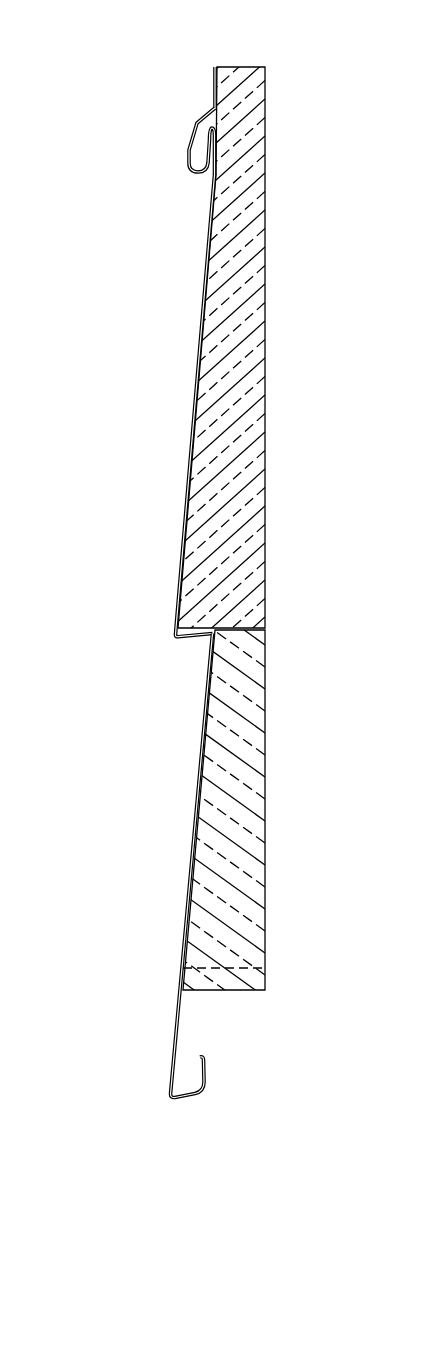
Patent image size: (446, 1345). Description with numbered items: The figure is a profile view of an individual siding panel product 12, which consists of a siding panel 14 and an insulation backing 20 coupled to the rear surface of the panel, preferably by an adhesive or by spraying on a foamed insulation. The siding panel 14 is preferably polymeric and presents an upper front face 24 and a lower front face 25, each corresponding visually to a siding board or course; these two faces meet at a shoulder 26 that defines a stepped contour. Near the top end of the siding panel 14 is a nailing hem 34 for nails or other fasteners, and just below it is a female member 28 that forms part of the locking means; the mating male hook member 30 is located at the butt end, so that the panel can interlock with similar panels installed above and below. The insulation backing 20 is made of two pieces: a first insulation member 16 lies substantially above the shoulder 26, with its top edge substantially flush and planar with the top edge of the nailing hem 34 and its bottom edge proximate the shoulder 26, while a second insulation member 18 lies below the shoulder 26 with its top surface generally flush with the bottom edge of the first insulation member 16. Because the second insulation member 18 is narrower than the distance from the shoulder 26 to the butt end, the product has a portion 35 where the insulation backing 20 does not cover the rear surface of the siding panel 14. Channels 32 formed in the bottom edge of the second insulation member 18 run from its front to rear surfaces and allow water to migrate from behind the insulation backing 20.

The siding panel product 12 is at (144, 463).
The siding panel 14 is at (180, 556).
The first insulation member 16 is at (265, 368).
The second insulation member 18 is at (265, 773).
The insulation backing 20 is at (313, 540).
The upper front face 24 is at (198, 373).
The lower front face 25 is at (196, 818).
The shoulder 26 is at (173, 637).
The female member 28 is at (187, 139).
The male hook member 30 is at (192, 1102).
The channels 32 is at (252, 974).
The nailing hem 34 is at (214, 92).
The portion where insulation backing does not cover rear surface 35 is at (220, 1032).